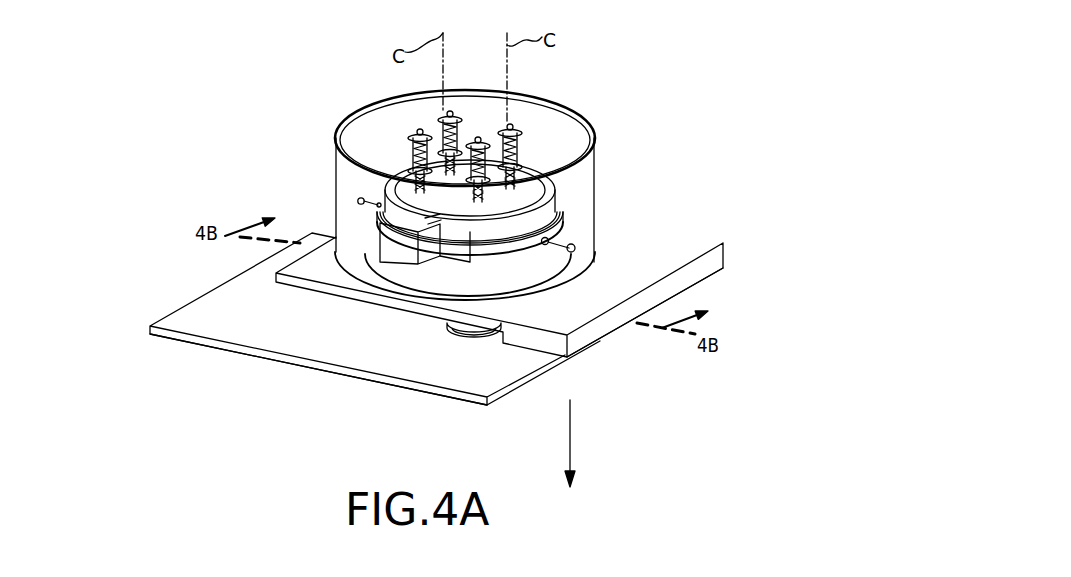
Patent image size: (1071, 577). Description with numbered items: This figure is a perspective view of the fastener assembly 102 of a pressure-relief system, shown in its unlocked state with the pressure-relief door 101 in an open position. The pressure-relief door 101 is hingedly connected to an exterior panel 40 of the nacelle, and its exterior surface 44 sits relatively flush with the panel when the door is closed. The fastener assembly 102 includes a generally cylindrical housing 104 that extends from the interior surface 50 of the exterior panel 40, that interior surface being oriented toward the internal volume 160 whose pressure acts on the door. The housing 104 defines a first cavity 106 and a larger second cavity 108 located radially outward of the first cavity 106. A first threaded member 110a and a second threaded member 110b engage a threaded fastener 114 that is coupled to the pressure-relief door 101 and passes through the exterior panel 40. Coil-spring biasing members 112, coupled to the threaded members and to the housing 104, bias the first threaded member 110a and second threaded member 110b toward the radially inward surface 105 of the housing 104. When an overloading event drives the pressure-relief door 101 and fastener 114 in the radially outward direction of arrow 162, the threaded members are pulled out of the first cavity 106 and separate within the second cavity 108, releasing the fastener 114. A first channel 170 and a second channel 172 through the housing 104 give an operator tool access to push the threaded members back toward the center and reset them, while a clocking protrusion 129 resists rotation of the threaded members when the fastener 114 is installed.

The pressure-relief door 101 is at (160, 92).
The fastener assembly 102 is at (645, 90).
The housing 104 is at (547, 115).
The radially inward surface of housing 105 is at (386, 156).
The first cavity 106 is at (553, 195).
The second cavity 108 is at (575, 220).
The first threaded member 110a is at (447, 258).
The second threaded member 110b is at (400, 243).
The biasing members 112 is at (418, 134).
The threaded fastener 114 is at (475, 328).
The clocking protrusion 129 is at (432, 222).
The internal volume 160 is at (688, 113).
The arrow indicating radially outward direction 162 is at (570, 432).
The first channel 170 is at (590, 250).
The second channel 172 is at (348, 190).
The exterior panel 40 is at (705, 243).
The exterior surface of pressure-relief door 44 is at (257, 357).
The interior surface of exterior panel 50 is at (599, 303).